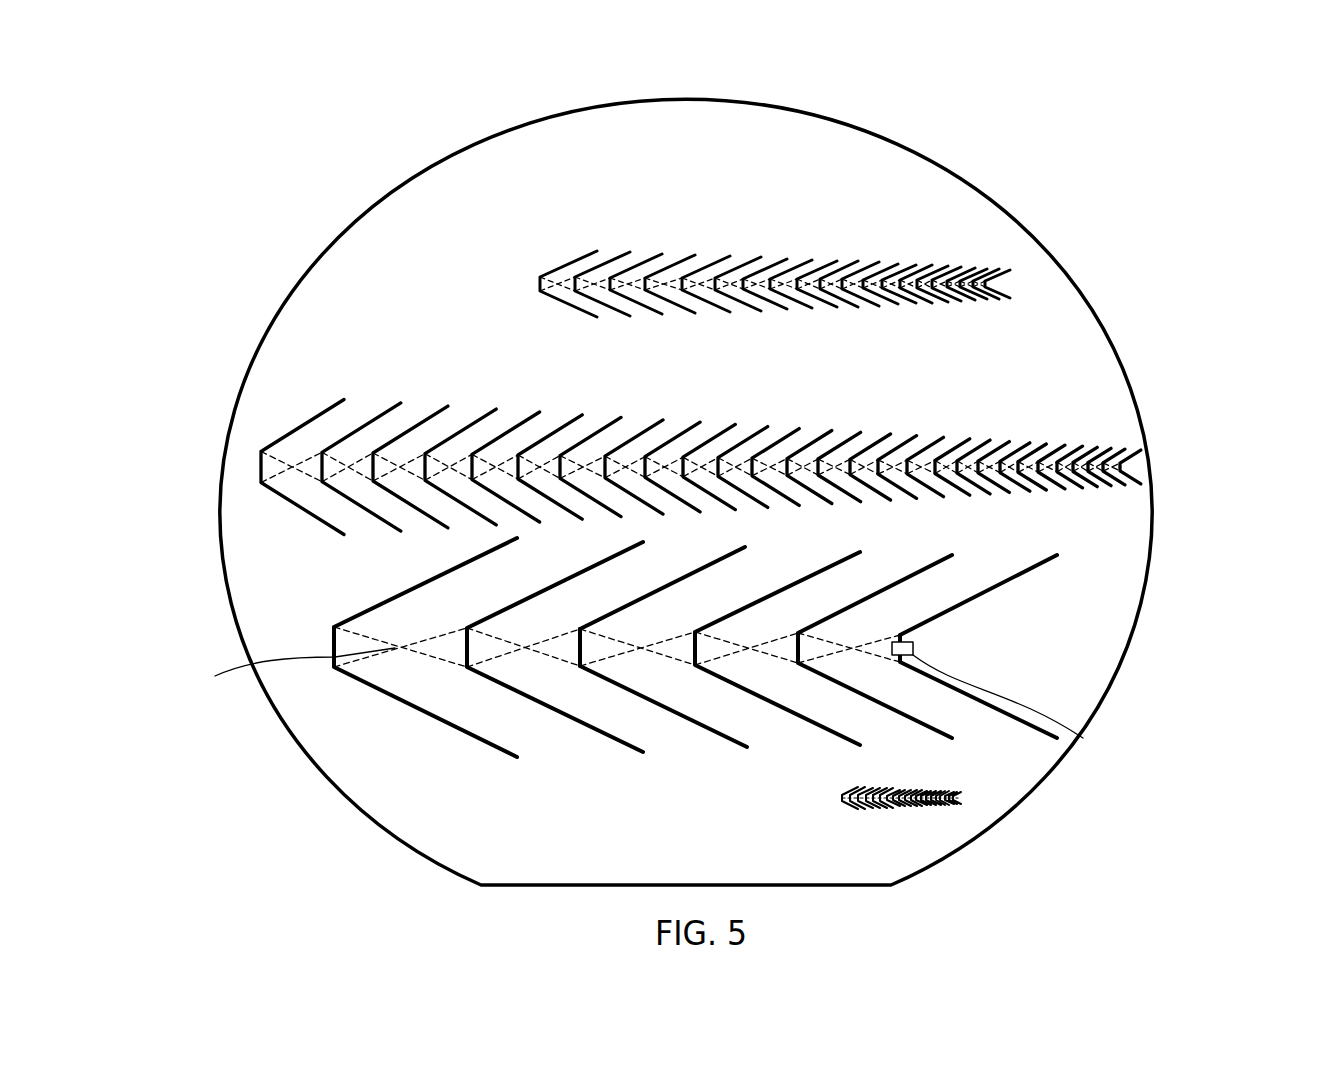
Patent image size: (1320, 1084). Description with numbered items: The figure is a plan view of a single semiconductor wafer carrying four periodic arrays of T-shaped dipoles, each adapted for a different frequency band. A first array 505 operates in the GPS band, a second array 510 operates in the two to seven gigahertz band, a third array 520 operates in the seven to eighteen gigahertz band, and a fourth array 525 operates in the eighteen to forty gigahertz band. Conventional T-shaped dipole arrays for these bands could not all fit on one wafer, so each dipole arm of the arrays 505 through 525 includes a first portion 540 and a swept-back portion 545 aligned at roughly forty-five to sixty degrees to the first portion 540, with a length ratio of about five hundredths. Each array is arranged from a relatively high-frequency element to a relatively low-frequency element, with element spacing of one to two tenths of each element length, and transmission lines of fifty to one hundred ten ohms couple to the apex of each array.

The first array 505 is at (662, 652).
The second array 510 is at (322, 413).
The third array 520 is at (680, 260).
The fourth array 525 is at (897, 781).
The first portion 540 is at (575, 656).
The swept-back portion 545 is at (730, 543).